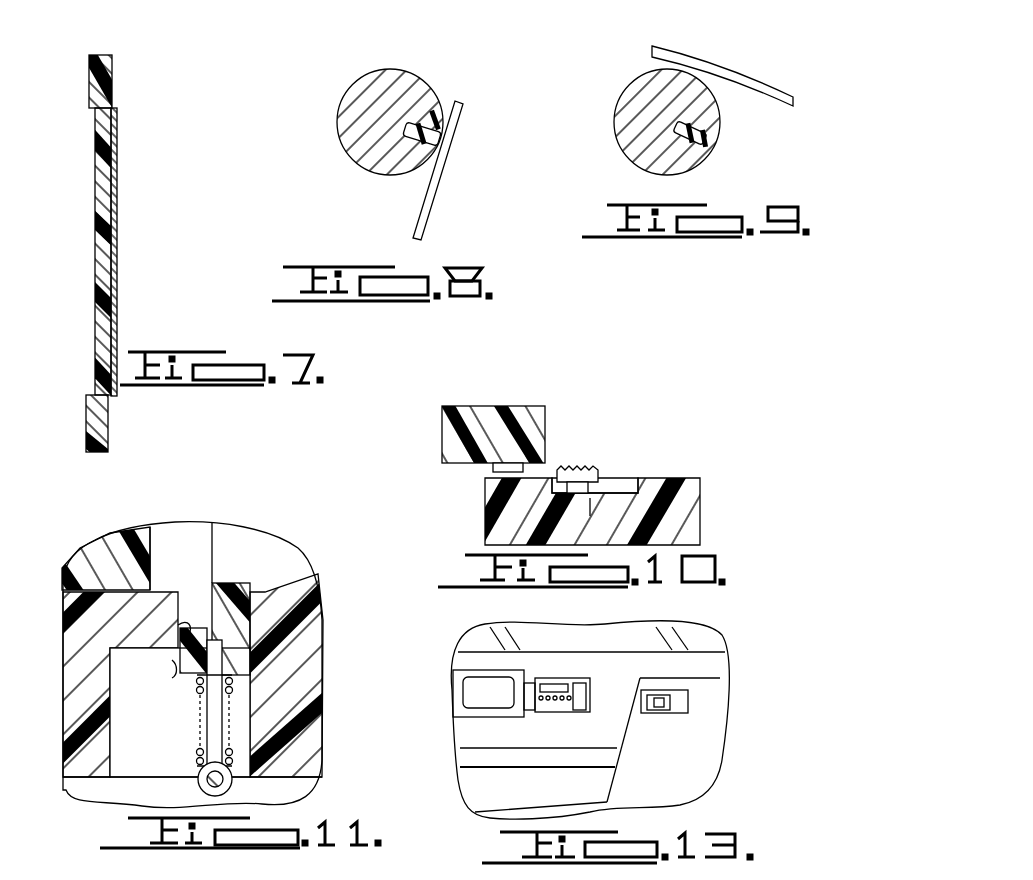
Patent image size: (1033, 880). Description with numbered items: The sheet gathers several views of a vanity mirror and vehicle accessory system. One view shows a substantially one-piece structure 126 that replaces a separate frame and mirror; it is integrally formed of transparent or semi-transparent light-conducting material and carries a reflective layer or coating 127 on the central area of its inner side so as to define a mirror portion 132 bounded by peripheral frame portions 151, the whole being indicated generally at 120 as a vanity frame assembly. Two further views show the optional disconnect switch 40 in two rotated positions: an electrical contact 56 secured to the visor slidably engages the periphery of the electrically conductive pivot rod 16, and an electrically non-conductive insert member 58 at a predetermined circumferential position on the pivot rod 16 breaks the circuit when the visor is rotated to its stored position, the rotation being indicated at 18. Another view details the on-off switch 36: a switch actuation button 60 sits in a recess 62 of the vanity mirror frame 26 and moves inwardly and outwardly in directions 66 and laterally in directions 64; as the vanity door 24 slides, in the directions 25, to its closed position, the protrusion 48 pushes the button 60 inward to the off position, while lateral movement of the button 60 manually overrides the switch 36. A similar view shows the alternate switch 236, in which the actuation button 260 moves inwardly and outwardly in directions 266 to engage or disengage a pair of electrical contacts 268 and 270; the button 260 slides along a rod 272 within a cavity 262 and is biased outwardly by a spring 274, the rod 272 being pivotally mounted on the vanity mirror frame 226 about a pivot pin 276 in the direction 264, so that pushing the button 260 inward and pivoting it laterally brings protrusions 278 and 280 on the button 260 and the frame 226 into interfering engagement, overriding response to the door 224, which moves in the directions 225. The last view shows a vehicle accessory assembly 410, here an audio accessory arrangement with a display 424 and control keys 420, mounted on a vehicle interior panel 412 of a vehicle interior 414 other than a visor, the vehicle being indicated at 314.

In FIG. 7, the mounting strip 120 is at (136, 262).
In FIG. 7, the peripheral frame portions 151 is at (93, 103).
In FIG. 7, the mirror portion 132 is at (95, 241).
In FIG. 7, the reflective layer or coating 127 is at (117, 257).
In FIG. 7, the one-piece structure 126 is at (86, 422).
In FIG. 8, the pivot rod 16 is at (336, 122).
In FIG. 9, the pivot rod 16 is at (630, 108).
In FIG. 8, the disconnect switch 40 is at (462, 126).
In FIG. 9, the disconnect switch 40 is at (738, 128).
In FIG. 8, the electrical contact 56 is at (430, 190).
In FIG. 9, the electrical contact 56 is at (758, 90).
In FIG. 8, the non-conductive insert member 58 is at (437, 108).
In FIG. 9, the non-conductive insert member 58 is at (712, 140).
In FIG. 8, the pivot direction 18 is at (487, 170).
In FIG. 9, the pivot direction 18 is at (688, 30).
In FIG. 10, the vanity door 24 is at (440, 443).
In FIG. 10, the sliding direction 25 is at (532, 391).
In FIG. 10, the protrusion 48 is at (493, 467).
In FIG. 10, the vanity mirror frame 26 is at (622, 500).
In FIG. 10, the on-off switch 36 is at (570, 446).
In FIG. 10, the switch actuation button 60 is at (570, 470).
In FIG. 10, the recess 62 is at (620, 492).
In FIG. 10, the lateral directions 64 is at (590, 461).
In FIG. 10, the inward and outward directions 66 is at (590, 508).
In FIG. 11, the door 224 is at (140, 528).
In FIG. 11, the lateral motion 225 is at (112, 548).
In FIG. 11, the vanity mirror frame 226 is at (216, 639).
In FIG. 11, the switch 236 is at (228, 568).
In FIG. 11, the actuation button 260 is at (245, 598).
In FIG. 11, the cavity 262 is at (108, 740).
In FIG. 11, the pivotal direction 264 is at (192, 572).
In FIG. 11, the inward and outward directions 266 is at (256, 590).
In FIG. 11, the electrical contact 268 is at (290, 656).
In FIG. 11, the electrical contact 270 is at (318, 630).
In FIG. 11, the rod or pin 272 is at (252, 723).
In FIG. 11, the spring 274 is at (255, 753).
In FIG. 11, the pivot pin 276 is at (205, 785).
In FIG. 11, the protrusion 278 is at (180, 620).
In FIG. 11, the protrusion 280 is at (172, 672).
In FIG. 13, the vehicle accessory assembly 410 is at (517, 695).
In FIG. 13, the vehicle interior panel 412 is at (690, 674).
In FIG. 13, the vehicle interior 414 is at (705, 701).
In FIG. 13, the control keys 420 is at (560, 708).
In FIG. 13, the display 424 is at (472, 712).
In FIG. 13, the vehicle 314 is at (773, 879).